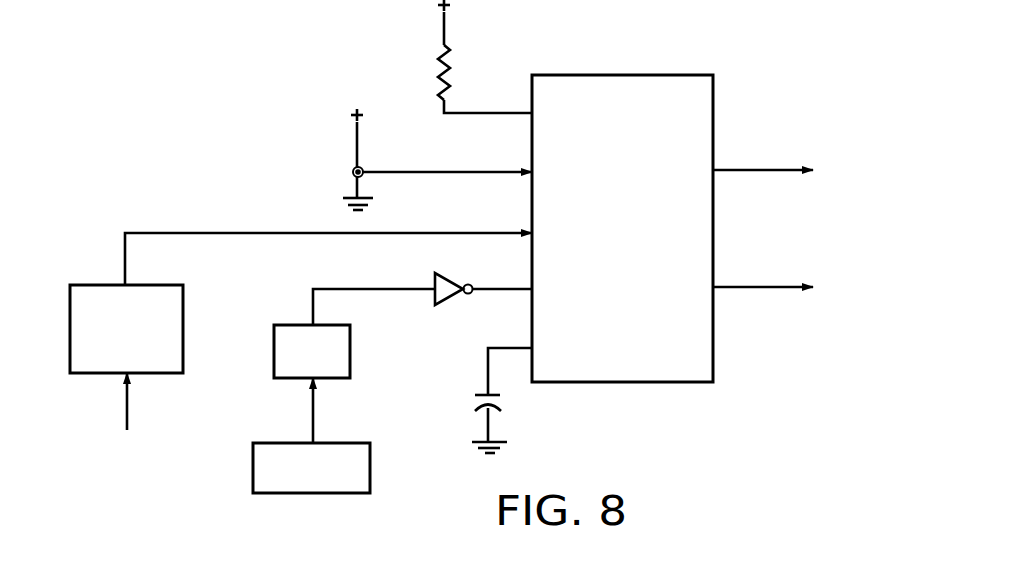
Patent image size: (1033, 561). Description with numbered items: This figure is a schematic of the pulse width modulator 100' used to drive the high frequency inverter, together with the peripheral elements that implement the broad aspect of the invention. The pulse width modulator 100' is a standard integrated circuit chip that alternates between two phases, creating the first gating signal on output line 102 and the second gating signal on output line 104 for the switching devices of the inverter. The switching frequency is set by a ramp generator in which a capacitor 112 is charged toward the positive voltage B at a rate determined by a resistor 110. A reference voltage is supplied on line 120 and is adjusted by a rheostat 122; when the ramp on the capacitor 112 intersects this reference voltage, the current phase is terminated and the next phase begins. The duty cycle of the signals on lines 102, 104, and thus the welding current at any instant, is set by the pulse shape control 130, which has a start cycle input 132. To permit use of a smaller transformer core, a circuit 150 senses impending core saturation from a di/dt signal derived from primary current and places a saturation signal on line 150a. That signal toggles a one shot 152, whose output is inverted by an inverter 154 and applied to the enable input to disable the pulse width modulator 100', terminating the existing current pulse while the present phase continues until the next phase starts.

The pulse width modulator 100' is at (625, 194).
The output line 102 is at (757, 167).
The output line 104 is at (762, 287).
The resistor 110 is at (442, 62).
The capacitor 112 is at (500, 403).
The line 120 is at (478, 172).
The rheostat 122 is at (350, 168).
The pulse shape control 130 is at (97, 283).
The start cycle input 132 is at (125, 408).
The circuit 150 is at (252, 465).
The line 150a is at (313, 420).
The one shot 152 is at (290, 323).
The inverter 154 is at (435, 277).